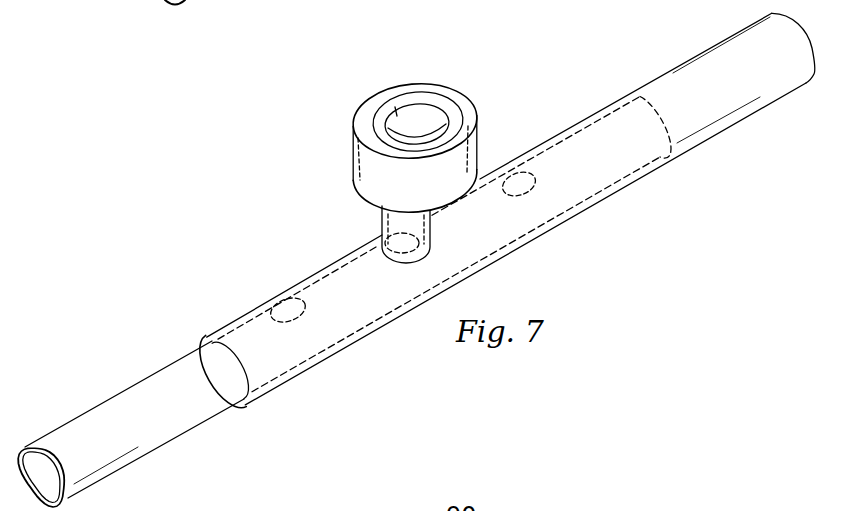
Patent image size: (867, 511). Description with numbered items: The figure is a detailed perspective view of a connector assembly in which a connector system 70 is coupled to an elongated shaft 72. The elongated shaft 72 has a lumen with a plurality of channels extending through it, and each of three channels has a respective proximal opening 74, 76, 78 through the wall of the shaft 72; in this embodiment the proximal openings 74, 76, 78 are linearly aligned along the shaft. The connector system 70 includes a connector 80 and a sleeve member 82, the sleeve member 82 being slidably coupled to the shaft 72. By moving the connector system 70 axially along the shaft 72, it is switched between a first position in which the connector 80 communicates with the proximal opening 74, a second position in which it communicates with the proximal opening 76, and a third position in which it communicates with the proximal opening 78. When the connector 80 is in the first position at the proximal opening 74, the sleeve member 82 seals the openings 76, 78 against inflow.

The connector system 70 is at (413, 262).
The elongated shaft 72 is at (116, 464).
The proximal opening 74 is at (286, 304).
The proximal opening 76 is at (397, 242).
The proximal opening 78 is at (521, 178).
The connector 80 is at (445, 90).
The sleeve member 82 is at (759, 100).